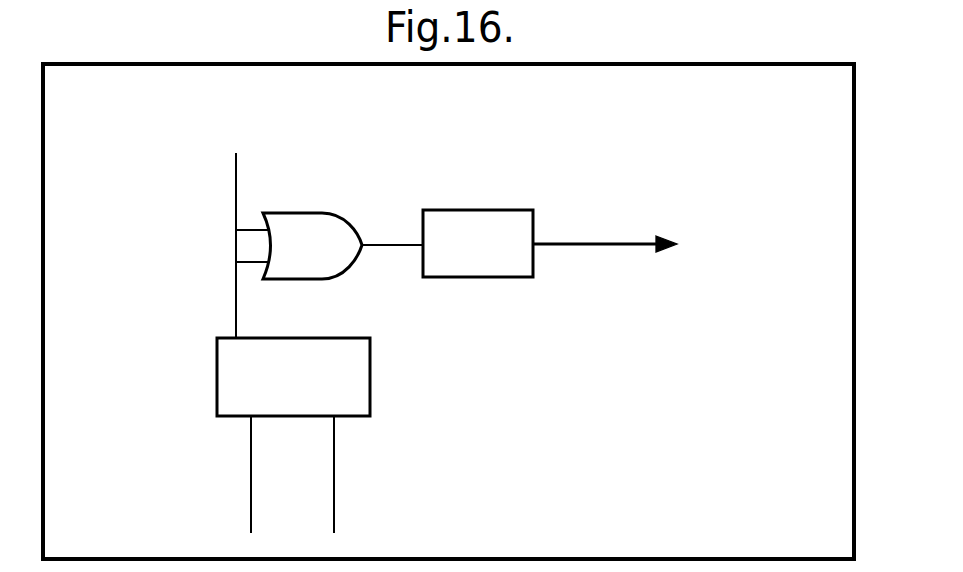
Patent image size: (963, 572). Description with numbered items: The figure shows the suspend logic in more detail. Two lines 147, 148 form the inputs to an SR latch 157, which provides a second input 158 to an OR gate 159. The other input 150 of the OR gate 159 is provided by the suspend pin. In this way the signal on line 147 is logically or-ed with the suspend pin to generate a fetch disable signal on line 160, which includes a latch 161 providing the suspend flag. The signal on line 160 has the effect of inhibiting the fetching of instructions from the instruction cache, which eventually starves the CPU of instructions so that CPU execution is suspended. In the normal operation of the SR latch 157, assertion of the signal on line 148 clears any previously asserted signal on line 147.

The line 147 is at (251, 486).
The line 148 is at (334, 497).
The other input 150 is at (236, 168).
The SR latch 157 is at (370, 388).
The second input 158 is at (236, 325).
The OR gate 159 is at (318, 213).
The line 160 is at (548, 244).
The latch 161 is at (472, 278).